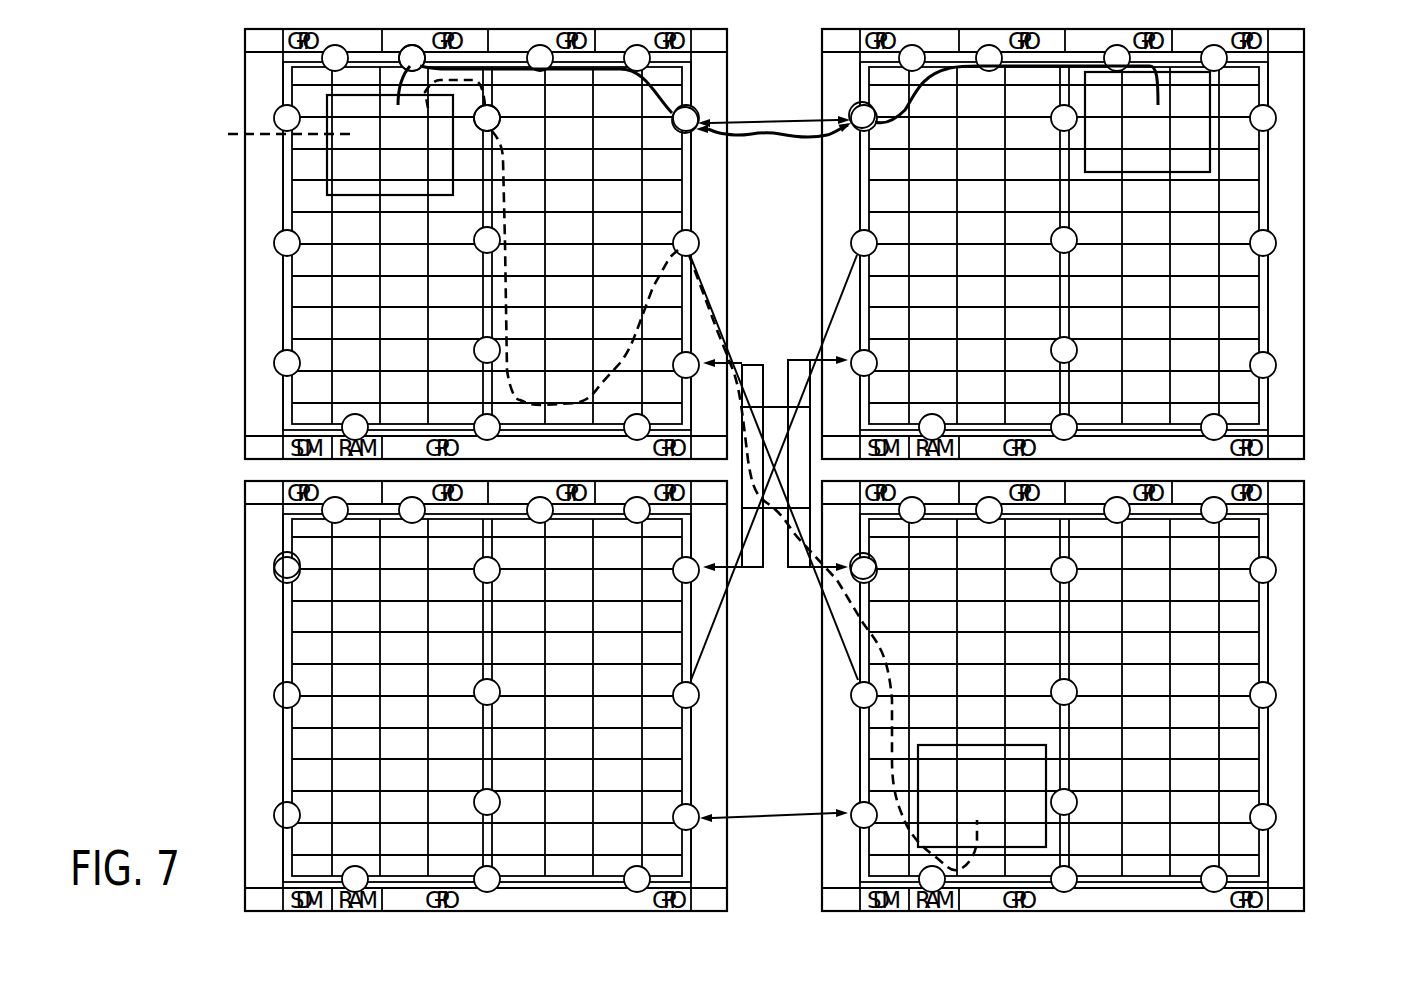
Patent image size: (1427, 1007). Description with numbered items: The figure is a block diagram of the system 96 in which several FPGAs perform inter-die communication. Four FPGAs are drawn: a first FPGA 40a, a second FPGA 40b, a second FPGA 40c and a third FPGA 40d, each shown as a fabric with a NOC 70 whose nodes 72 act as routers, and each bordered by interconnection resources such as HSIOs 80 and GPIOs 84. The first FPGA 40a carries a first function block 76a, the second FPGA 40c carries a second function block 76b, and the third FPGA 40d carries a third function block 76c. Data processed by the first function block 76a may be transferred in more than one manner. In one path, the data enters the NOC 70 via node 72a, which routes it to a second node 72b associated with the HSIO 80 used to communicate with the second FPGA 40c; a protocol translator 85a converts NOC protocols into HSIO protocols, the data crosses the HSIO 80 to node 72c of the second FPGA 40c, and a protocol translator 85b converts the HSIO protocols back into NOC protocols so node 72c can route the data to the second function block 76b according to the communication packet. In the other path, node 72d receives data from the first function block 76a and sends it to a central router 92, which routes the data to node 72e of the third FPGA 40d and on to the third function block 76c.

The first FPGA 40a is at (212, 358).
The second FPGA 40b is at (210, 627).
The second FPGA 40c is at (1327, 257).
The third FPGA 40d is at (1327, 567).
The NOC 70 is at (288, 640).
The node 72 is at (283, 562).
The node 72a is at (404, 64).
The second node 72b is at (700, 115).
The node 72c is at (848, 116).
The node 72d is at (482, 130).
The node 72e is at (858, 570).
The first function block 76a is at (342, 172).
The second function block 76b is at (1192, 115).
The third function block 76c is at (1015, 828).
The HSIO 80 is at (717, 280).
The GPIO 84 is at (407, 897).
The protocol translator 85a is at (692, 131).
The protocol translator 85b is at (850, 130).
The central router 92 is at (776, 405).
The system 96 is at (145, 95).